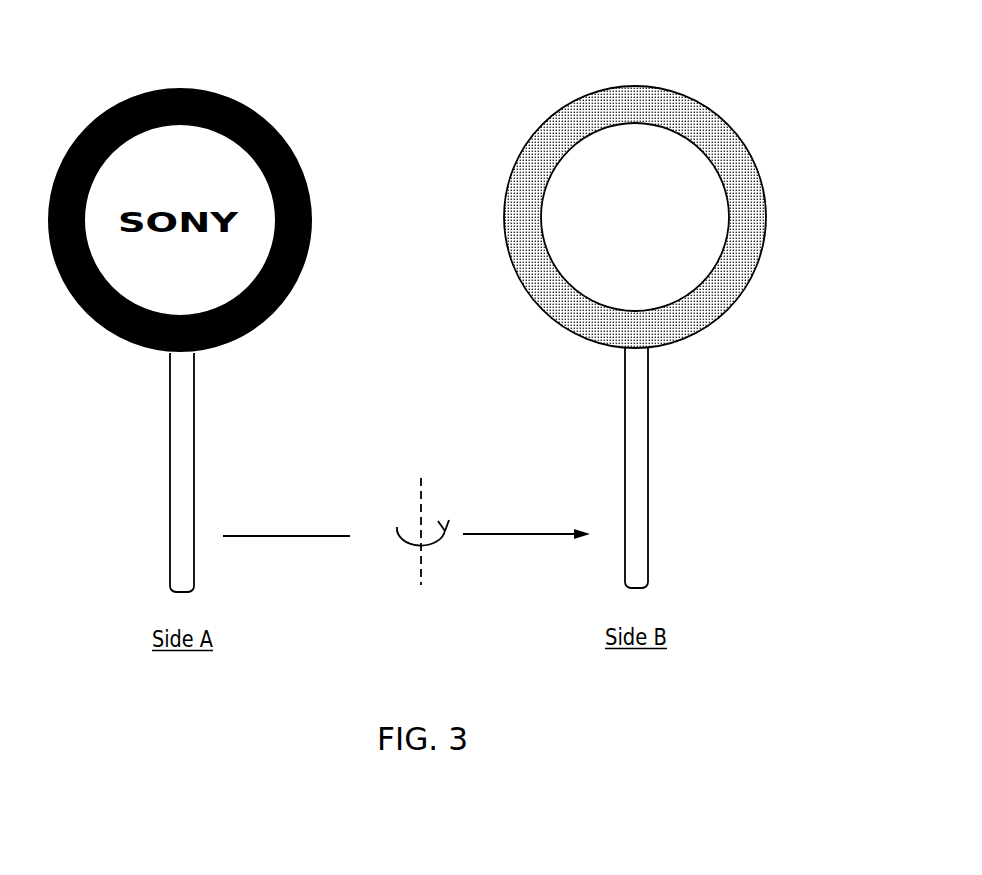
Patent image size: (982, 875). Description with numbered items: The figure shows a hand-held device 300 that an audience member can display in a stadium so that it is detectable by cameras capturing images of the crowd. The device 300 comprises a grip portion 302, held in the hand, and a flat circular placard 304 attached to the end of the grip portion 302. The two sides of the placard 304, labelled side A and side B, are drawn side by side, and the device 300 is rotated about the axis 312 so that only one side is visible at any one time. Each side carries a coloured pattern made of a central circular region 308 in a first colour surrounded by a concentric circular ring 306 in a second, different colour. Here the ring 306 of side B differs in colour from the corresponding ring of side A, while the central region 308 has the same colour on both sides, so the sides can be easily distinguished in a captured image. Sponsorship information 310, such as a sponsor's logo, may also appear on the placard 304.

The device 300 is at (670, 306).
The grip portion 302 is at (648, 472).
The placard 304 is at (670, 186).
The concentric circular ring 306 is at (728, 147).
The central circular region 308 is at (633, 148).
The sponsorship information 310 is at (637, 233).
The axis 312 is at (423, 484).